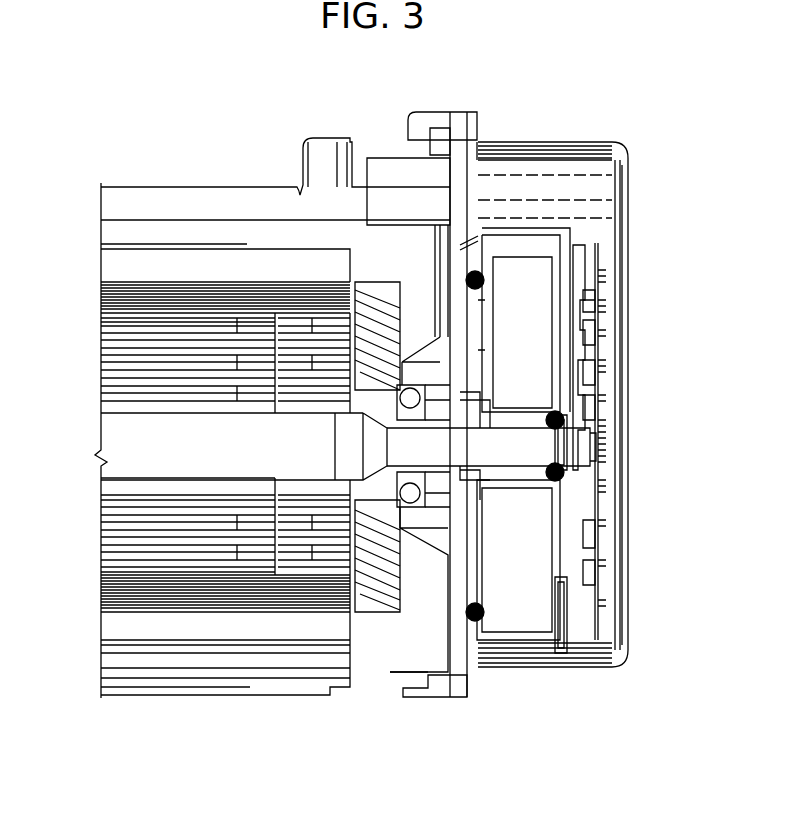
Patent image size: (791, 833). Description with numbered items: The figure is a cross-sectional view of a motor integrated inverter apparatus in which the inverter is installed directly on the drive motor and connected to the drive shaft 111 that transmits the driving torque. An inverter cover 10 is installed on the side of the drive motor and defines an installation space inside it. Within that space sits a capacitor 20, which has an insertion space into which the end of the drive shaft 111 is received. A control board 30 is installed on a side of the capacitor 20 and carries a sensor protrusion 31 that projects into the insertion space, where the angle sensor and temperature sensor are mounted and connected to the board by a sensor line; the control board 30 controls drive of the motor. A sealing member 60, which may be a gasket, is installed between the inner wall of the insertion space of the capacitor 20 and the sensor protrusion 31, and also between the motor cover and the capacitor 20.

The inverter cover 10 is at (622, 187).
The capacitor 20 is at (527, 612).
The control board 30 is at (587, 523).
The sensor protrusion 31 is at (567, 603).
The sealing member 60 is at (478, 272).
The drive shaft 111 is at (120, 432).